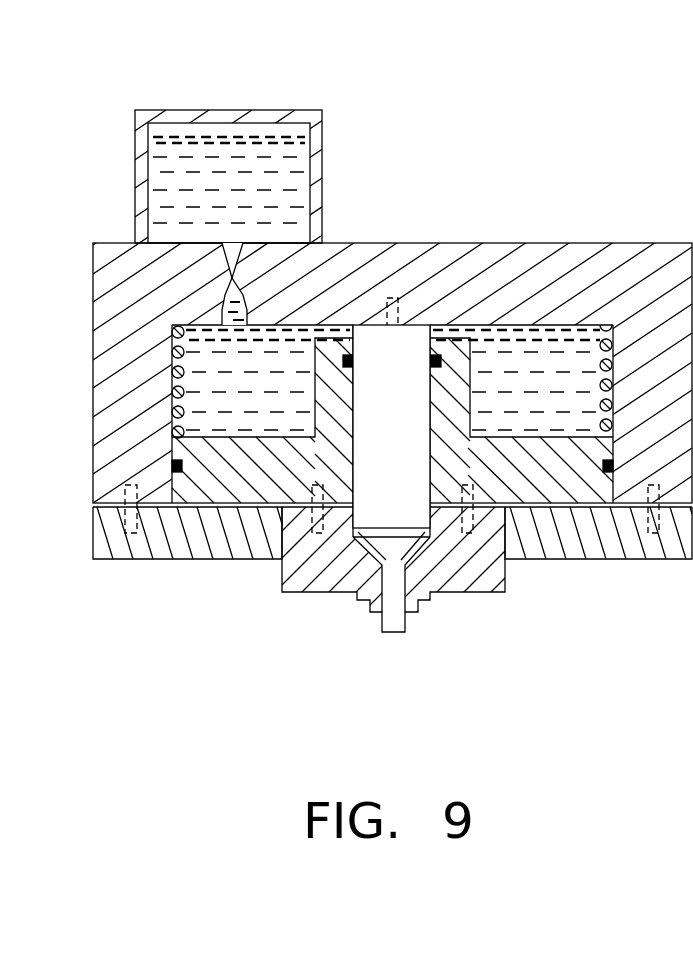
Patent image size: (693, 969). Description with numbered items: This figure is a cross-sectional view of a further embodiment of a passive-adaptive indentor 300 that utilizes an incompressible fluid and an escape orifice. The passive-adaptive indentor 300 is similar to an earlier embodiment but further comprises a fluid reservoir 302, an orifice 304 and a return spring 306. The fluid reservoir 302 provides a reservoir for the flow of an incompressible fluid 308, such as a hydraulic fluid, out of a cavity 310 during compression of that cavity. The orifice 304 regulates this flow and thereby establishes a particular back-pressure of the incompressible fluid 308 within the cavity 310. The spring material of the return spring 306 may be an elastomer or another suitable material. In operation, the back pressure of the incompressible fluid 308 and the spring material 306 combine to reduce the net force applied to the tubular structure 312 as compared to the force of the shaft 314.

The passive-adaptive indentor 300 is at (411, 92).
The fluid reservoir 302 is at (323, 191).
The orifice 304 is at (232, 280).
The return spring 306 is at (172, 405).
The incompressible fluid 308 is at (205, 160).
The cavity 310 is at (207, 437).
The tubular structure 312 is at (467, 593).
The shaft 314 is at (418, 475).